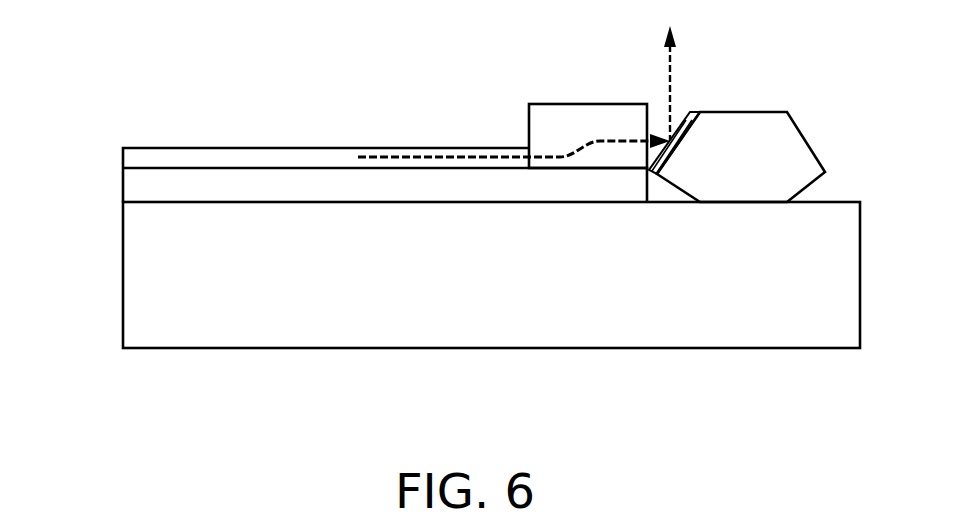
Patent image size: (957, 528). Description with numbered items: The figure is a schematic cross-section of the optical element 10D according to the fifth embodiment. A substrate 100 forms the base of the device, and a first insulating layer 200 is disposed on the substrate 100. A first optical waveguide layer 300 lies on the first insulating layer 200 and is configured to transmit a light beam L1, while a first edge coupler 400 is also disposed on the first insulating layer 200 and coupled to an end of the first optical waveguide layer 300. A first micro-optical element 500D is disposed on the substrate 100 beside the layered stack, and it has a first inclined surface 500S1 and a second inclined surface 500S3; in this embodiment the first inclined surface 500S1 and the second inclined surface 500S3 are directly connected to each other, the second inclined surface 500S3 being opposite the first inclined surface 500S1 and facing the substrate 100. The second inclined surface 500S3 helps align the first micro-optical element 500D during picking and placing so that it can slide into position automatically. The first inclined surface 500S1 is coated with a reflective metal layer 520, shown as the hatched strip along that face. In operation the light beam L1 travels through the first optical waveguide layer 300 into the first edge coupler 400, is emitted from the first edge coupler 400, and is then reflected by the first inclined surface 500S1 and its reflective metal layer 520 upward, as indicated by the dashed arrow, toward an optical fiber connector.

The substrate 100 is at (135, 265).
The first insulating layer 200 is at (135, 188).
The first optical waveguide layer 300 is at (135, 158).
The first edge coupler 400 is at (578, 118).
The light beam L1 is at (432, 158).
The first micro-optical element 500D is at (787, 137).
The reflective metal layer 520 is at (655, 175).
The first inclined surface 500S1 is at (694, 137).
The second inclined surface 500S3 is at (685, 183).
The optical element 10D is at (462, 223).